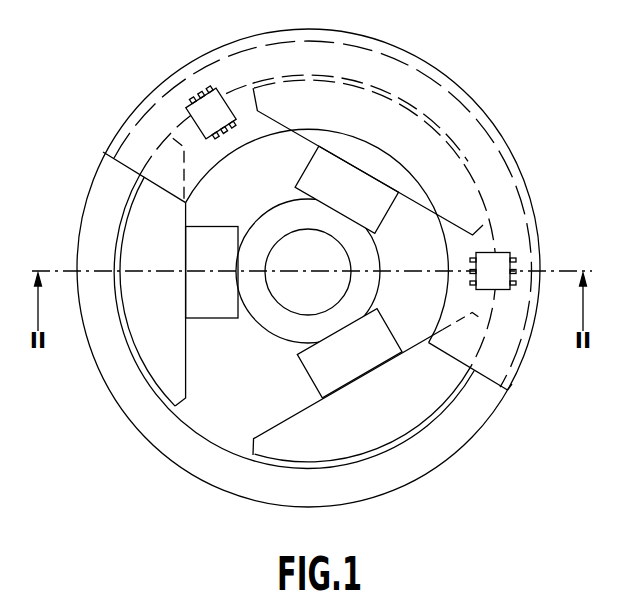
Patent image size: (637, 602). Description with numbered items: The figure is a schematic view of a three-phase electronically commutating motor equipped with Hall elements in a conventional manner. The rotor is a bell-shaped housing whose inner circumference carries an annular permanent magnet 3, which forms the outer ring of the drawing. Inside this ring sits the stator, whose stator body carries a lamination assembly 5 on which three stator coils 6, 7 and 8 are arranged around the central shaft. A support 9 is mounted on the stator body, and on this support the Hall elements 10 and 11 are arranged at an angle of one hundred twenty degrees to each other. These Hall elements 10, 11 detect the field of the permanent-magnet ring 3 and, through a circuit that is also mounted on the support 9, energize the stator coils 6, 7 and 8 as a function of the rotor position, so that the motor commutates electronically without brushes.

The annular permanent magnet 3 is at (481, 409).
The lamination assembly 5 is at (152, 363).
The stator coil 6 is at (320, 361).
The stator coil 7 is at (386, 203).
The stator coil 8 is at (215, 238).
The support 9 is at (522, 371).
The Hall element 10 is at (497, 258).
The Hall element 11 is at (220, 93).